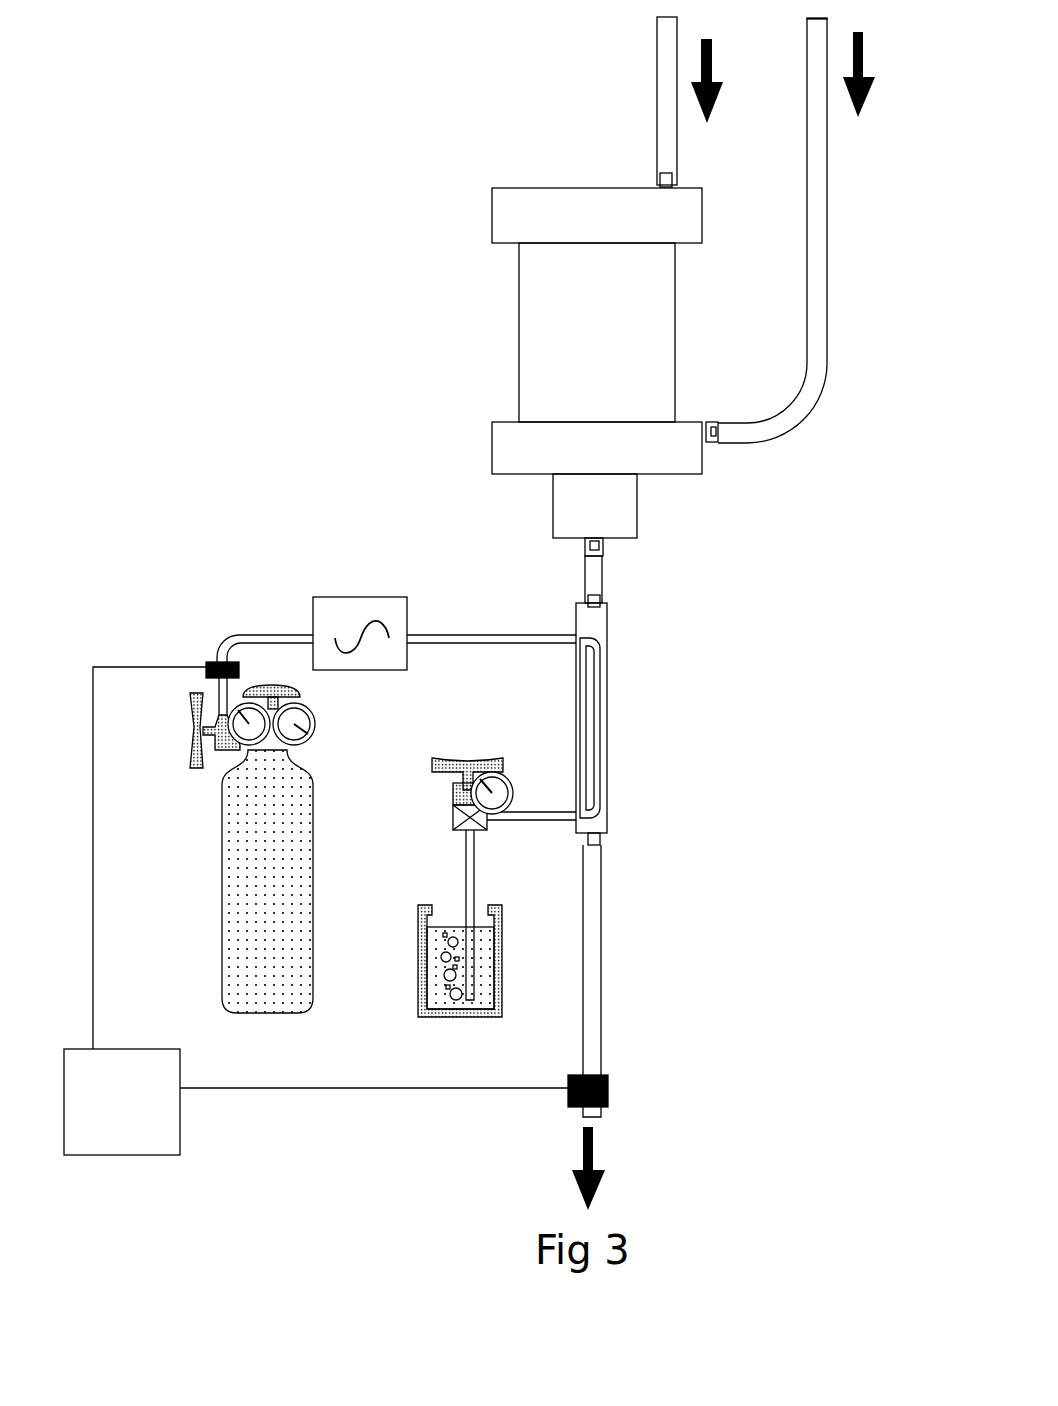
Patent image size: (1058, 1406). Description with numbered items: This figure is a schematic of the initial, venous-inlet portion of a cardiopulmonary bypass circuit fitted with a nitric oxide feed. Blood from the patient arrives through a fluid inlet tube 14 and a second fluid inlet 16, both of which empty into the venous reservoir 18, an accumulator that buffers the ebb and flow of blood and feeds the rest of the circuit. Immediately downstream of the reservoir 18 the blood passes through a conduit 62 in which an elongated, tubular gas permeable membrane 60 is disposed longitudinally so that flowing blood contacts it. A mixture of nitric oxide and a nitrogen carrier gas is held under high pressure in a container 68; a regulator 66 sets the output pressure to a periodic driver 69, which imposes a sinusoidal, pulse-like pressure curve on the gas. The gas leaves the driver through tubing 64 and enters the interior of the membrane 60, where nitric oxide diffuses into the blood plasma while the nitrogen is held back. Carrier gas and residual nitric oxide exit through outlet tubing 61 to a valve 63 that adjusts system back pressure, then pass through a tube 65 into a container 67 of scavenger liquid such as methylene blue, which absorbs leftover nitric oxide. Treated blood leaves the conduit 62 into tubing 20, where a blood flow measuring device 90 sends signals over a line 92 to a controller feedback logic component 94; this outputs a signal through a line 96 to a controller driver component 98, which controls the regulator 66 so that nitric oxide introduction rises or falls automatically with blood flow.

The fluid inlet tube 14 is at (657, 78).
The fluid inlet 16 is at (828, 282).
The venous reservoir 18 is at (612, 354).
The tubing 20 is at (601, 872).
The gas permeable membrane 60 is at (600, 669).
The outlet tubing 61 is at (543, 820).
The conduit 62 is at (607, 770).
The valve 63 is at (453, 812).
The tubing 64 is at (445, 643).
The tube 65 is at (463, 870).
The regulator 66 is at (223, 750).
The container 67 is at (418, 968).
The container 68 is at (292, 894).
The periodic driver 69 is at (340, 597).
The blood flow measuring device 90 is at (610, 1073).
The line 92 is at (270, 1088).
The controller feedback logic component 94 is at (150, 1122).
The line 96 is at (152, 667).
The controller driver component 98 is at (215, 663).